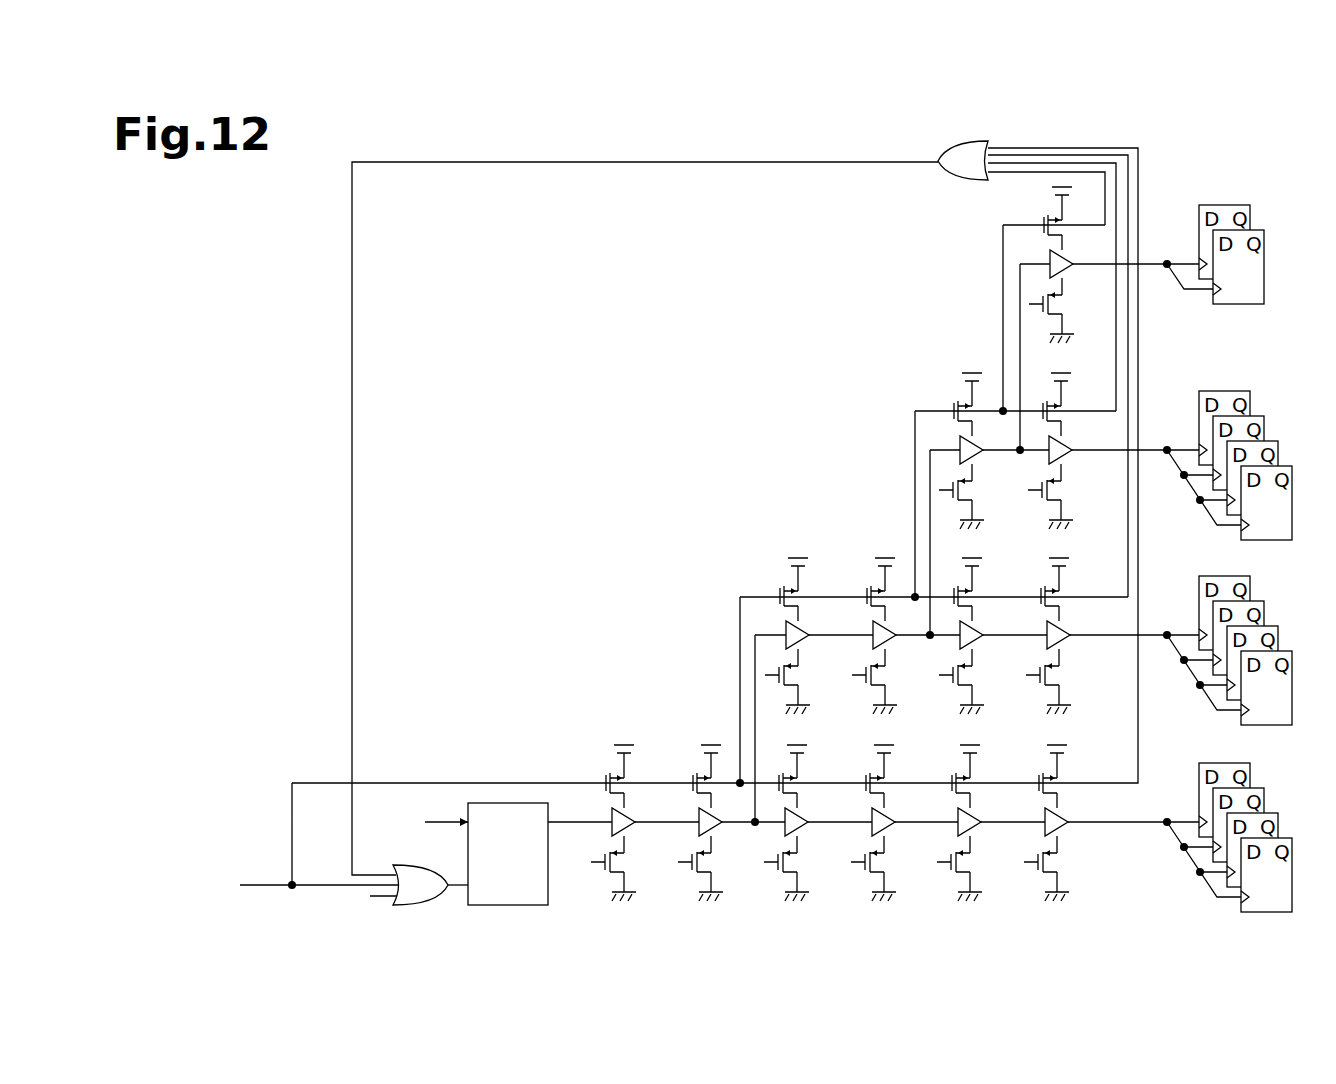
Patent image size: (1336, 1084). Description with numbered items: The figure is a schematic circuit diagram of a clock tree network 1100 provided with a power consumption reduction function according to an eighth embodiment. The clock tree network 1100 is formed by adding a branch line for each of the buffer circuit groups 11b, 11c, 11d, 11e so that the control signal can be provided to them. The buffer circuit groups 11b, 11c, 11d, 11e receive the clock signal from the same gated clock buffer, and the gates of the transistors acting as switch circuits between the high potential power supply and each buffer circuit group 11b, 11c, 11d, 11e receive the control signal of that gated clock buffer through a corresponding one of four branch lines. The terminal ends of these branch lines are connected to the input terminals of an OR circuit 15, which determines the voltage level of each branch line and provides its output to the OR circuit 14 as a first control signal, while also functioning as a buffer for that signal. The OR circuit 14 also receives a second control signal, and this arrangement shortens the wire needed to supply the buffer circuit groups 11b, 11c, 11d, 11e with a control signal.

The clock tree network 1100 is at (312, 210).
The OR circuit 15 is at (953, 146).
The OR circuit 14 is at (425, 906).
The buffer circuit group 11b is at (660, 722).
The buffer circuit group 11c is at (823, 535).
The buffer circuit group 11d is at (925, 384).
The buffer circuit group 11e is at (990, 246).